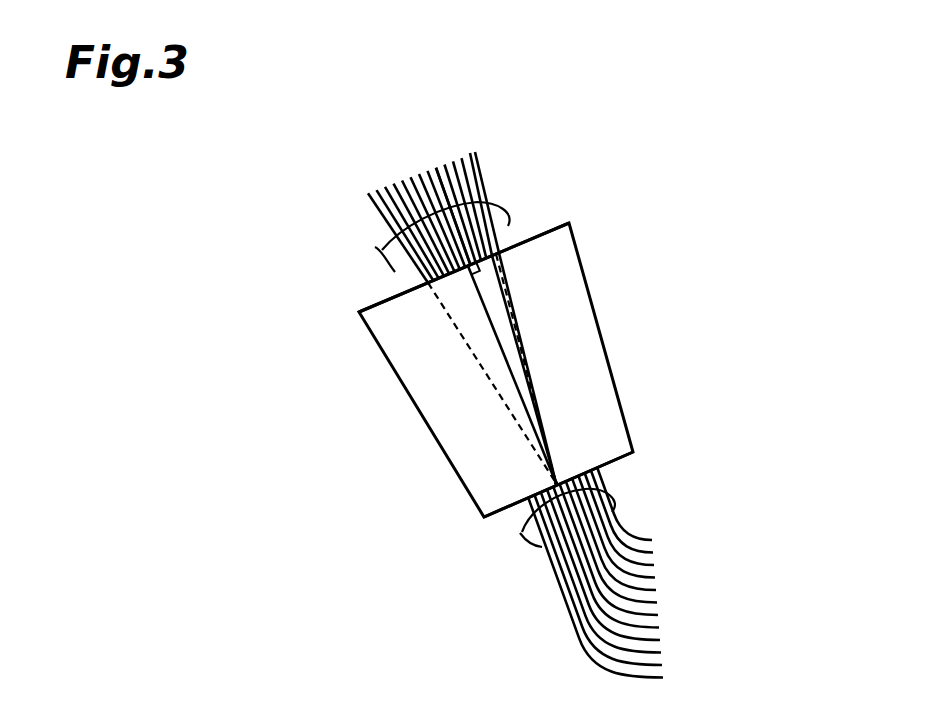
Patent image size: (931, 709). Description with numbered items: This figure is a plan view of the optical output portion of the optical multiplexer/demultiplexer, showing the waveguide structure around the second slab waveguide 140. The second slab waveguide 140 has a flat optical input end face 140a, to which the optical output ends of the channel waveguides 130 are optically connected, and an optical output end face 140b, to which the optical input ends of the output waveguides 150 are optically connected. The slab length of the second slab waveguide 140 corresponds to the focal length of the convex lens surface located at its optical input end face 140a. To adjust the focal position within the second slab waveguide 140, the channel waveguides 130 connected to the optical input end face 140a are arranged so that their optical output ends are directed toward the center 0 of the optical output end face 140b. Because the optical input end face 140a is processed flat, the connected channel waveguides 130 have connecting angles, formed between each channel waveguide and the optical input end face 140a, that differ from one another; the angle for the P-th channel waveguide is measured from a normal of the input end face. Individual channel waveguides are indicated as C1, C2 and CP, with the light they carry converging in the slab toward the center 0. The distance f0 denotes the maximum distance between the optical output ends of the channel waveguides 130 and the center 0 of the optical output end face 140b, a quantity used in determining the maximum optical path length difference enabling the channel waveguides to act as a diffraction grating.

The channel waveguides 130 is at (375, 247).
The second slab waveguide 140 is at (424, 420).
The optical input end face 140a is at (540, 225).
The optical output end face 140b is at (618, 460).
The output waveguides 150 is at (520, 533).
The first ray of the incident beam C1 is at (484, 165).
The second ray of the incident beam C2 is at (473, 152).
The principal ray of the incident beam CP is at (455, 178).
The maximum distance f0 is at (543, 407).
The center of optical output end face 0 is at (558, 480).